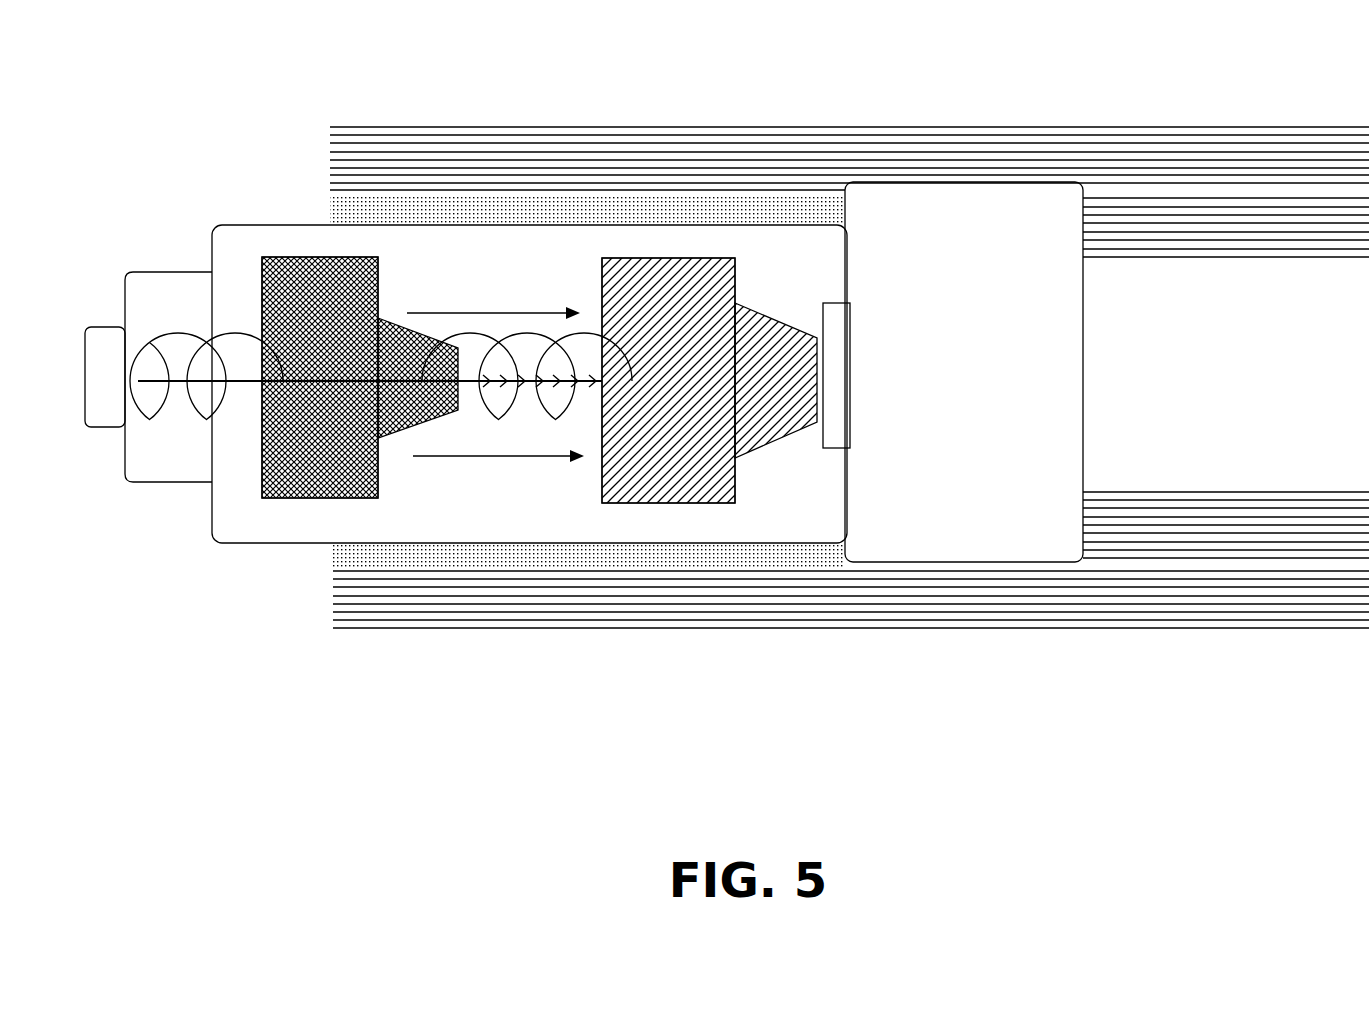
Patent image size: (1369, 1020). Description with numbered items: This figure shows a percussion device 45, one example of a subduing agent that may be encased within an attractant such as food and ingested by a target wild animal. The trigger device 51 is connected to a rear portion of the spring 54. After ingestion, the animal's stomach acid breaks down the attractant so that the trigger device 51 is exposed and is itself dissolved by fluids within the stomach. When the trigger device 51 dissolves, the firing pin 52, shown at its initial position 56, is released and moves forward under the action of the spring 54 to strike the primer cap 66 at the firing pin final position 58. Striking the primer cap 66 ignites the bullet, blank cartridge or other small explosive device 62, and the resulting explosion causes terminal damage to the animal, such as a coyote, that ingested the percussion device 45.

The percussion device 45 is at (851, 86).
The trigger device 51 is at (108, 428).
The firing pin 52 is at (270, 500).
The spring 54 is at (528, 333).
The initial position 56 is at (263, 242).
The firing pin final position 58 is at (600, 243).
The small explosive device 62 is at (964, 372).
The primer cap 66 is at (838, 302).